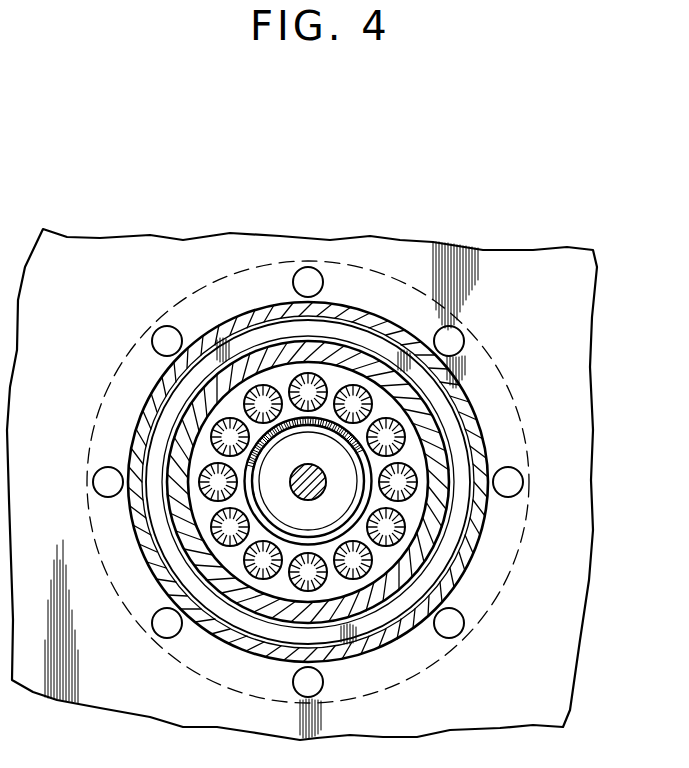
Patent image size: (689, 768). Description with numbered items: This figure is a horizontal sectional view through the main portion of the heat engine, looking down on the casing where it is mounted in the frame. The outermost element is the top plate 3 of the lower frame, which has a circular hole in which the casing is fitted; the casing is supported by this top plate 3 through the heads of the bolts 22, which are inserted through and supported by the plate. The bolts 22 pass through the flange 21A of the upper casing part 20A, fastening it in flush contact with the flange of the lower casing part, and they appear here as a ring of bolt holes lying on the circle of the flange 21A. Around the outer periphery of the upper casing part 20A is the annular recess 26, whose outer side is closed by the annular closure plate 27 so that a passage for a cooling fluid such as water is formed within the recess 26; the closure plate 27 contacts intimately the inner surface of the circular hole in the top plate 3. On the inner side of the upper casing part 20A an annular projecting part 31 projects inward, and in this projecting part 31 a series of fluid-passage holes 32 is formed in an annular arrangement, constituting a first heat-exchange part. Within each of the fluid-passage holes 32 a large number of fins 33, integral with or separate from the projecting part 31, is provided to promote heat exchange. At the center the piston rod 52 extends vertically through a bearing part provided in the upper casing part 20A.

The top plate 3 is at (573, 528).
The upper casing part 20A is at (173, 418).
The flange 21A is at (419, 290).
The bolts 22 is at (463, 338).
The annular recess 26 is at (460, 448).
The annular closure plate 27 is at (460, 396).
The annular projecting part 31 is at (275, 588).
The fluid-passage holes 32 is at (406, 531).
The fins 33 is at (205, 447).
The piston rod 52 is at (310, 499).